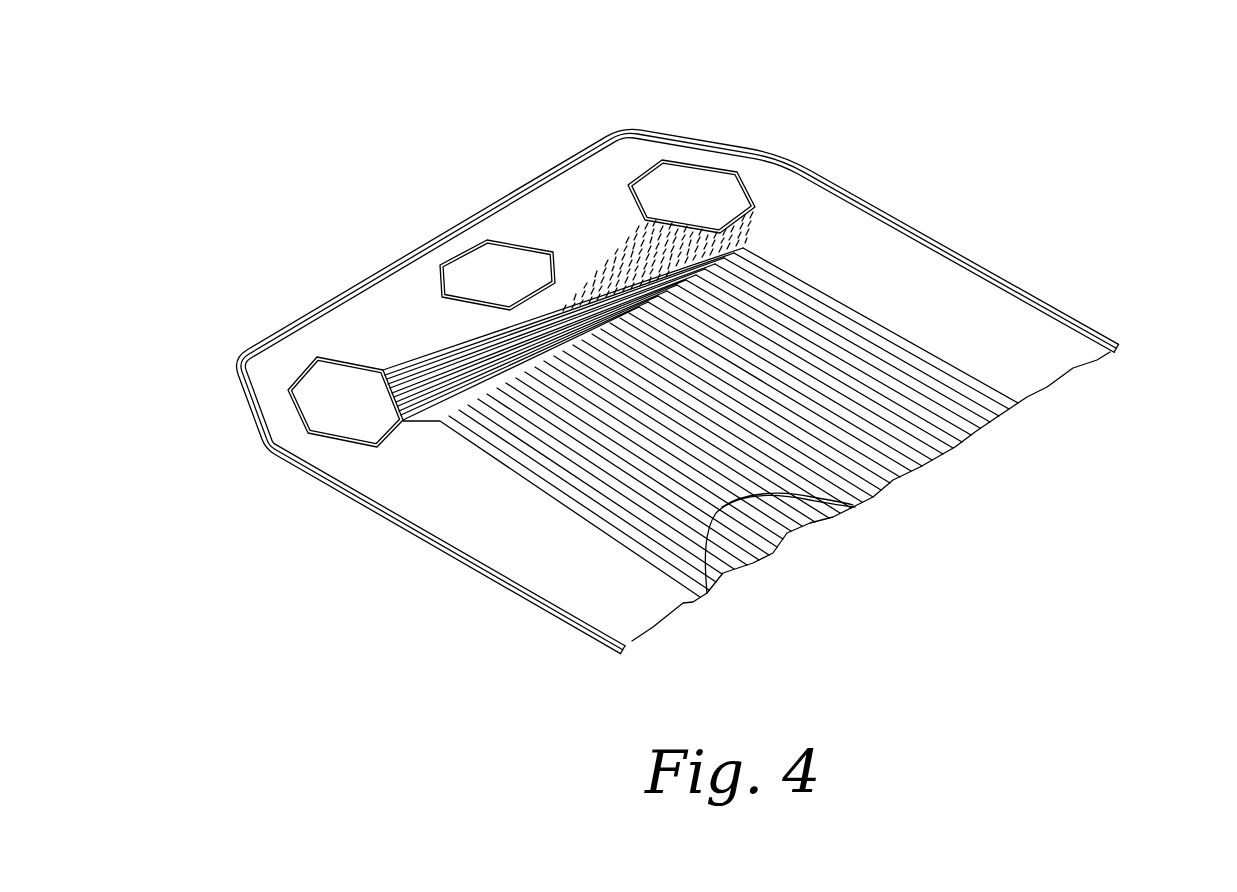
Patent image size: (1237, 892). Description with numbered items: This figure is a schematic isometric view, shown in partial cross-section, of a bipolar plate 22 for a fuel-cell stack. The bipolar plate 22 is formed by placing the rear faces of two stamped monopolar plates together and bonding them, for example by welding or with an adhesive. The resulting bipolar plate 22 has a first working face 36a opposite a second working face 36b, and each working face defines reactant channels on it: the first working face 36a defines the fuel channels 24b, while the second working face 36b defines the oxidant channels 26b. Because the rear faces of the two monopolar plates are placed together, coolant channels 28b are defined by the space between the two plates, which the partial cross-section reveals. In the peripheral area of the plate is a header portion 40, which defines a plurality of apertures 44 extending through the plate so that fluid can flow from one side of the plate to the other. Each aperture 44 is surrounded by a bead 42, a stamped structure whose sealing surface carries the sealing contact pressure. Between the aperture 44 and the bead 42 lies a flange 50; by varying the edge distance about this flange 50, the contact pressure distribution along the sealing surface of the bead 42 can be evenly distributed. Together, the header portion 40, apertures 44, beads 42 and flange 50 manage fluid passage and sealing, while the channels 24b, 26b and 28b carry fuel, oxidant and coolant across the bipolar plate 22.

The bipolar plate 22 is at (1152, 181).
The header portion 40 is at (870, 170).
The bead 42 is at (598, 182).
The aperture 44 is at (503, 265).
The flange 50 is at (617, 173).
The fuel channels 24b is at (817, 333).
The oxidant channels 26b is at (715, 587).
The coolant channels 28b is at (638, 641).
The first working face 36a is at (428, 498).
The second working face 36b is at (497, 578).